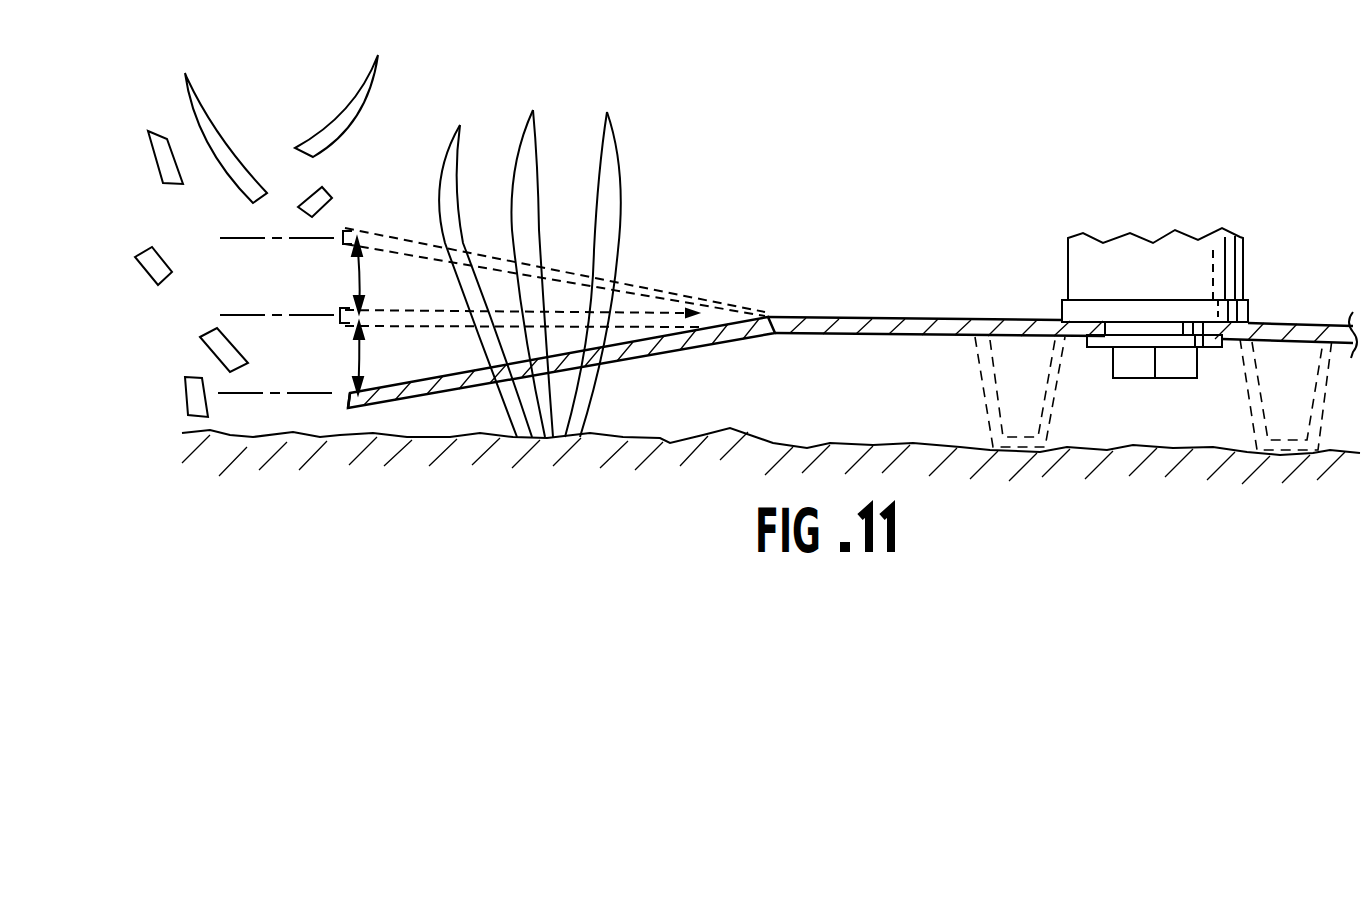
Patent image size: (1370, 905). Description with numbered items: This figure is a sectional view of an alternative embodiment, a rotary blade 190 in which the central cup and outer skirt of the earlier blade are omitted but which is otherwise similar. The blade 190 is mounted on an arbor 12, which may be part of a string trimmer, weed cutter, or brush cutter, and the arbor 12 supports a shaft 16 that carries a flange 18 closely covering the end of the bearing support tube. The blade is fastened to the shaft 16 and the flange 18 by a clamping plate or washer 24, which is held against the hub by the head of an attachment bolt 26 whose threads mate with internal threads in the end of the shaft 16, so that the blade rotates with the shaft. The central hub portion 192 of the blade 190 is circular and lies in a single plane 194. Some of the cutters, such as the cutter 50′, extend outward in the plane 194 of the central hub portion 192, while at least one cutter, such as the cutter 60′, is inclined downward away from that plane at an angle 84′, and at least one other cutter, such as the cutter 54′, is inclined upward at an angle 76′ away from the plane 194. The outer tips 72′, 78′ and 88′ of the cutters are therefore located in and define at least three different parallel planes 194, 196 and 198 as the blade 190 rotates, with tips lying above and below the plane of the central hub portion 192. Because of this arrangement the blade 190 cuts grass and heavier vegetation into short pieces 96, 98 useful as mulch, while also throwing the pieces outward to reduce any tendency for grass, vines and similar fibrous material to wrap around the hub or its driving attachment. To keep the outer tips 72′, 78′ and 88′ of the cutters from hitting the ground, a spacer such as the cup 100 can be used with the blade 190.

The arbor 12 is at (1243, 252).
The shaft 16 is at (1160, 327).
The flange 18 is at (1252, 308).
The clamping plate or washer 24 is at (1207, 350).
The attachment bolt 26 is at (1163, 378).
The cutter 50′ is at (413, 307).
The cutter 54′ is at (570, 270).
The cutter 60′ is at (646, 348).
The outer tip 72′ is at (338, 325).
The angle 76′ is at (358, 286).
The outer tip 78′ is at (341, 230).
The angle 84′ is at (360, 362).
The outer tip 88′ is at (347, 403).
The short piece 96 is at (150, 277).
The short piece 98 is at (187, 395).
The cup 100 is at (980, 390).
The rotary blade 190 is at (922, 230).
The central hub portion 192 is at (858, 317).
The plane 194 is at (247, 313).
The plane 196 is at (240, 238).
The plane 198 is at (247, 395).